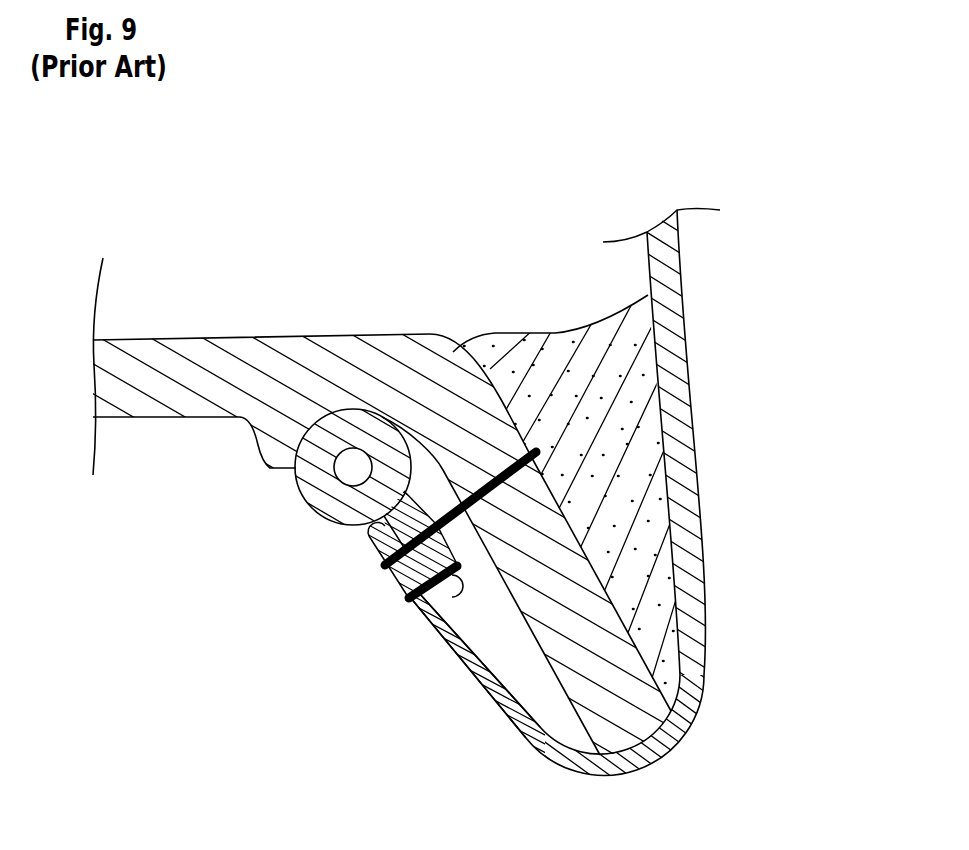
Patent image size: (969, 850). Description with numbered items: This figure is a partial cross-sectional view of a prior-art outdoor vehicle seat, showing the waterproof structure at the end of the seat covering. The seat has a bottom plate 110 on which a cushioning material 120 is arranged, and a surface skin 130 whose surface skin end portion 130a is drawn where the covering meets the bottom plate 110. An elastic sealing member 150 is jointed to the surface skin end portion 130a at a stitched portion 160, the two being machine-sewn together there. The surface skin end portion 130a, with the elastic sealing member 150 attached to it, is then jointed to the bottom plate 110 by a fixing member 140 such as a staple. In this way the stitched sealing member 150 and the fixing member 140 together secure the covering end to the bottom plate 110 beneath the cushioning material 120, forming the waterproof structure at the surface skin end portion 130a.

The bottom plate 110 is at (208, 365).
The cushioning material 120 is at (590, 348).
The cover 130 is at (688, 605).
The surface skin end portion 130a is at (485, 673).
The fixing member 140 is at (387, 567).
The elastic sealing member 150 is at (297, 494).
The stitched portion 160 is at (422, 603).